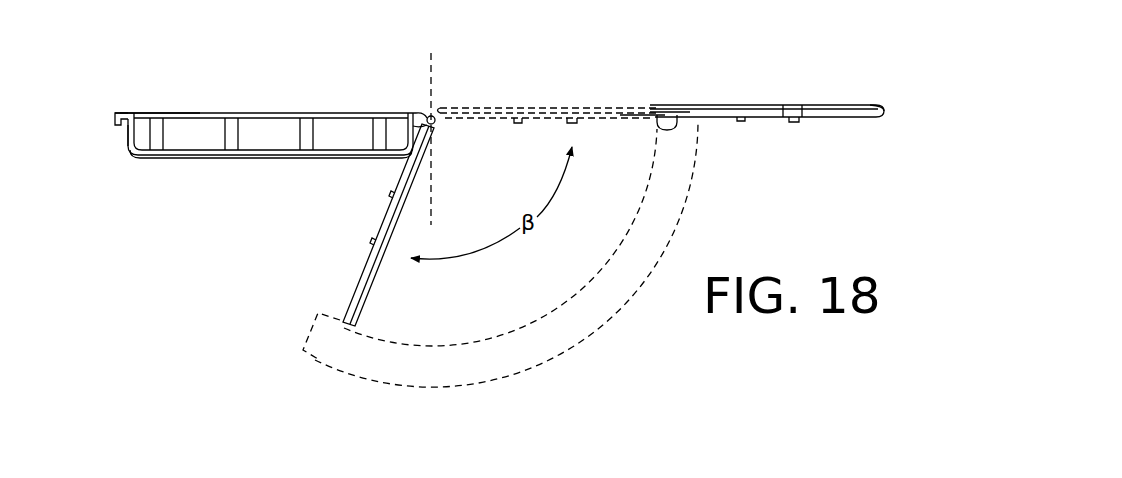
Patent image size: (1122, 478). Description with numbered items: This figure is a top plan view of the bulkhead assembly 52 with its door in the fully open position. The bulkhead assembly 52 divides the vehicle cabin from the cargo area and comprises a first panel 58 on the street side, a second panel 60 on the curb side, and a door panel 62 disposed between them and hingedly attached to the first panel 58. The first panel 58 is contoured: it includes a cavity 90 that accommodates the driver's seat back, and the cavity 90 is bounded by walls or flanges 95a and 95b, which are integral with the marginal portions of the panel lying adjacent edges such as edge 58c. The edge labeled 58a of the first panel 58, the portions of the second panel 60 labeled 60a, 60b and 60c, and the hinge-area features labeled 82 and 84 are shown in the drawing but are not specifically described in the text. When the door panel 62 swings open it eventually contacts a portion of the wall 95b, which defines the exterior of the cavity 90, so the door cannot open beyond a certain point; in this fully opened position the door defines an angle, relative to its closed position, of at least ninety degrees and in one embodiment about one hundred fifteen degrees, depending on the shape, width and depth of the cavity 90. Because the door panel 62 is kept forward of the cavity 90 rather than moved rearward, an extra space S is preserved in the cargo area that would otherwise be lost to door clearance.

The bulkhead assembly 52 is at (496, 97).
The first panel 58 is at (122, 127).
The tray upper wall 58a is at (127, 113).
The edge of first panel 58c is at (116, 120).
The second panel 60 is at (882, 112).
The panel top surface 60a is at (725, 105).
The panel bottom surface 60b is at (766, 118).
The panel end 60c is at (875, 105).
The door panel 62 is at (383, 220).
The hinge 82 is at (683, 108).
The hinge pin 84 is at (650, 110).
The cavity 90 is at (255, 147).
The wall or flange 95a is at (124, 148).
The wall or flange 95b is at (412, 131).
The extra space S is at (318, 327).